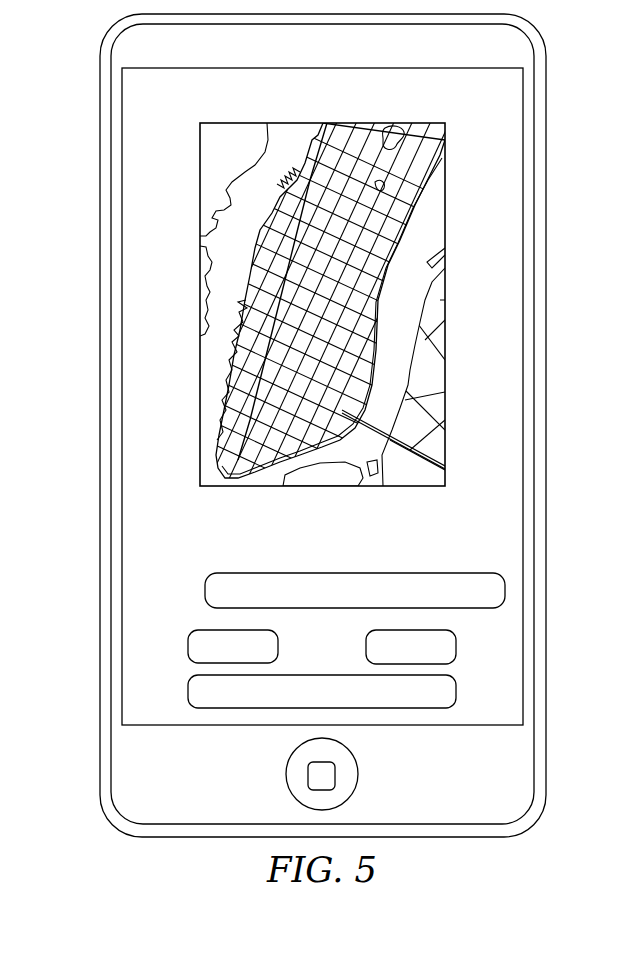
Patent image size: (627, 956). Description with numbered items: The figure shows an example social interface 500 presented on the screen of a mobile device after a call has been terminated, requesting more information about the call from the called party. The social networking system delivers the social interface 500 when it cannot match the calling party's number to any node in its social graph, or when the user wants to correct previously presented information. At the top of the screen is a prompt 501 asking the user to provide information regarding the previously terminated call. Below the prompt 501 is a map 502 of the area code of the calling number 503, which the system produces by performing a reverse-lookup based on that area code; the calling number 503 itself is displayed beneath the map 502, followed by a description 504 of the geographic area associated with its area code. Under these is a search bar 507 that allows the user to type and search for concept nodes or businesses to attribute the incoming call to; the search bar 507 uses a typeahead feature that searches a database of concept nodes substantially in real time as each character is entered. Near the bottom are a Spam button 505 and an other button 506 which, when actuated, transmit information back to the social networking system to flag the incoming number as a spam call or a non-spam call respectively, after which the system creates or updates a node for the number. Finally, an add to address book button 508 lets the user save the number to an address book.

The social interface 500 is at (523, 233).
The prompt 501 is at (462, 106).
The map 502 is at (446, 169).
The calling number 503 is at (394, 512).
The description 504 is at (464, 548).
The Spam button 505 is at (188, 646).
The other button 506 is at (457, 646).
The search bar 507 is at (505, 590).
The add to address book button 508 is at (457, 690).